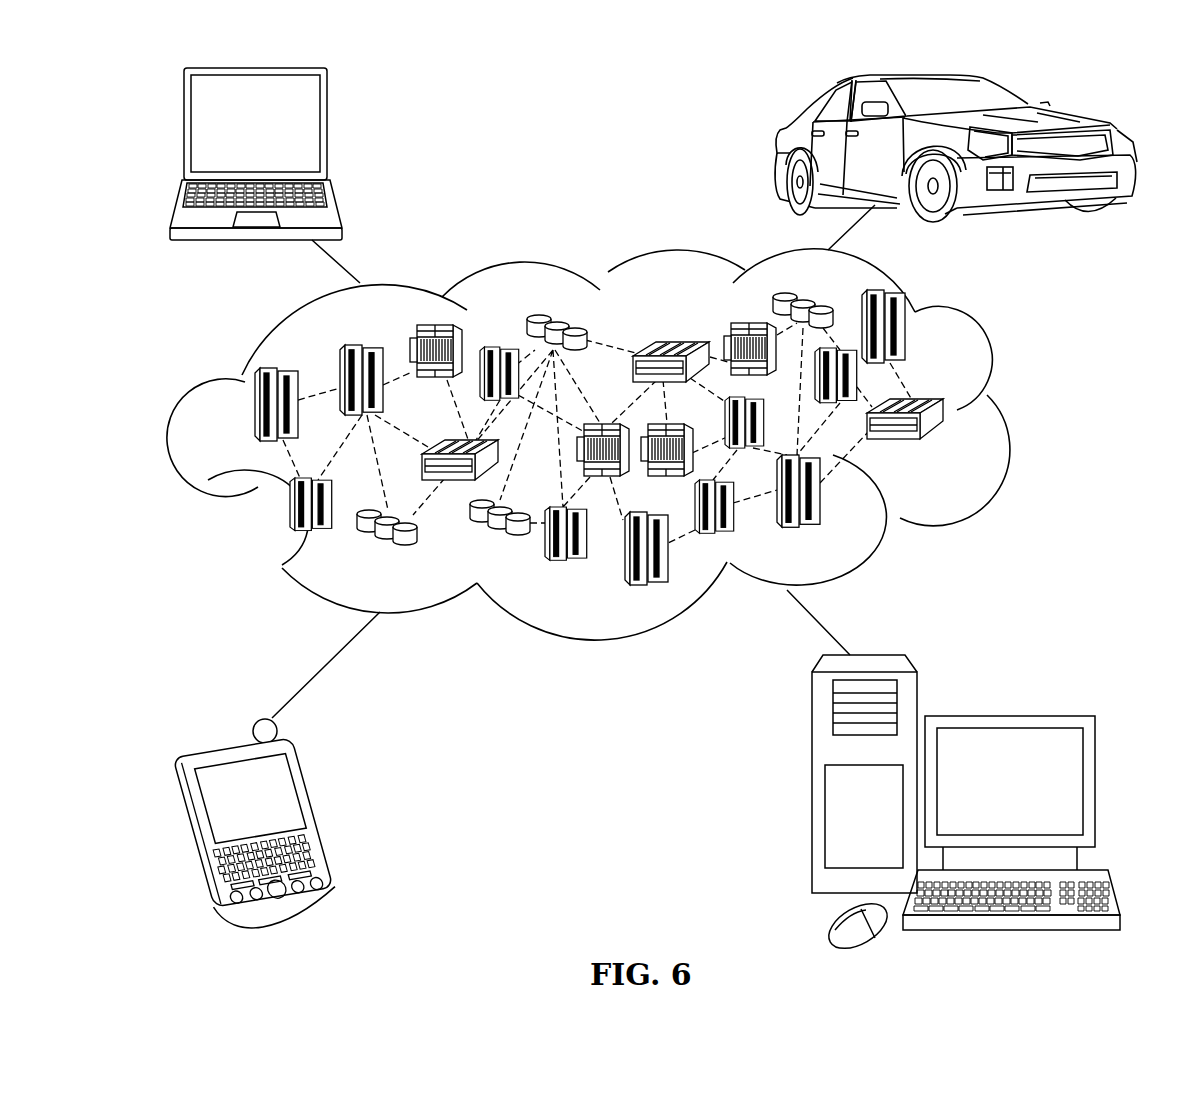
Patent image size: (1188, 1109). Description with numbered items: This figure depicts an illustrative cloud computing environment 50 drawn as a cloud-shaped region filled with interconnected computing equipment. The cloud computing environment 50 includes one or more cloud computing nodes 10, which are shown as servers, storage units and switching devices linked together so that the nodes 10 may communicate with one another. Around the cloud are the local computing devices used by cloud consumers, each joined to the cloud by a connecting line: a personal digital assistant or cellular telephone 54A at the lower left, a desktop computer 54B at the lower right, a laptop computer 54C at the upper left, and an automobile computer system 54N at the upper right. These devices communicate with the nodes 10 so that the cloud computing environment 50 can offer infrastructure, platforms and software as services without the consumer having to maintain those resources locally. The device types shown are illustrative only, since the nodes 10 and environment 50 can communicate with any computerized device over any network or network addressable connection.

The cloud computing node 10 is at (952, 449).
The cloud computing environment 50 is at (1005, 413).
The personal digital assistant or cellular telephone 54A is at (317, 810).
The desktop computer 54B is at (1008, 715).
The laptop computer 54C is at (327, 131).
The automobile computer system 54N is at (778, 148).